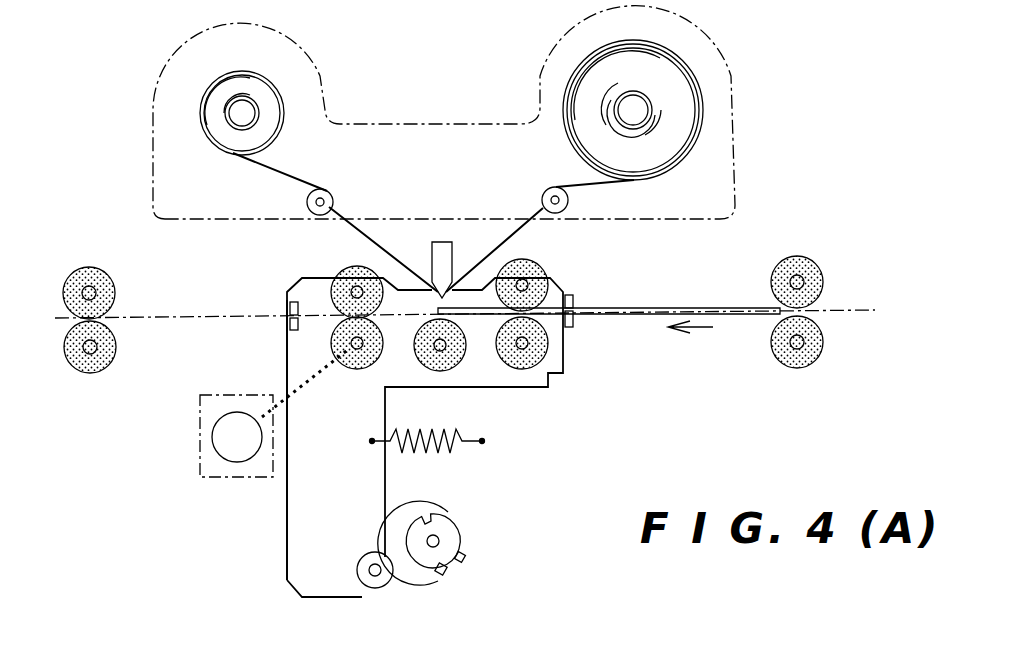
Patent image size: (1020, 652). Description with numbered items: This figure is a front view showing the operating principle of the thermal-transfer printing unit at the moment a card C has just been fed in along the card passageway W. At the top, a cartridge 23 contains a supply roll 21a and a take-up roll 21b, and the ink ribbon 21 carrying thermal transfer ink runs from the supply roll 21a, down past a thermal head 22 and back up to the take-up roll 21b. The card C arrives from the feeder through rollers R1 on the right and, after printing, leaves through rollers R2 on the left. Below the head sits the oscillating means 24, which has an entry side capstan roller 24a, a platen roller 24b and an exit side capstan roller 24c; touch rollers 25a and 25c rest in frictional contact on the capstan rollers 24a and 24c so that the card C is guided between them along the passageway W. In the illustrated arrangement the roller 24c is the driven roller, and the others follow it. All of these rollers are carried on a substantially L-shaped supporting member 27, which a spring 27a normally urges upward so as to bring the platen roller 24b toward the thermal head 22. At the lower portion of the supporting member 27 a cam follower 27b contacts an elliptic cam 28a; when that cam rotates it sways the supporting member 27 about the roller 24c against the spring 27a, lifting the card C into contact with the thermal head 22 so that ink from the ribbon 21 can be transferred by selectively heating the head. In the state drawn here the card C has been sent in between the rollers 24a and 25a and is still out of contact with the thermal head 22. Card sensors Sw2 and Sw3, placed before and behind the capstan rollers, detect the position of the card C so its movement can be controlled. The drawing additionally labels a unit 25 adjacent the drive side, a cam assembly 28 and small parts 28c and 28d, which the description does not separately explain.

The ink ribbon 21 is at (525, 203).
The supply roll 21a is at (677, 62).
The take-up roll 21b is at (207, 105).
The thermal head 22 is at (443, 257).
The cartridge 23 is at (323, 77).
The oscillating means 24 is at (272, 577).
The entry side capstan roller 24a is at (528, 363).
The platen roller 24b is at (453, 365).
The exit side capstan roller 24c is at (332, 336).
The motor 25 is at (200, 460).
The touch roller 25a is at (548, 266).
The touch roller 25c is at (350, 272).
The supporting member 27 is at (300, 503).
The spring 27a is at (428, 452).
The cam follower 27b is at (362, 580).
The cam 28 is at (454, 572).
The elliptic cam 28a is at (413, 573).
The cam pin 28c is at (465, 560).
The cam pin 28d is at (445, 578).
The card C is at (652, 308).
The card passageway W is at (195, 315).
The rollers R1 is at (775, 298).
The rollers R2 is at (112, 290).
The card sensor Sw2 is at (573, 325).
The card sensor Sw3 is at (288, 305).